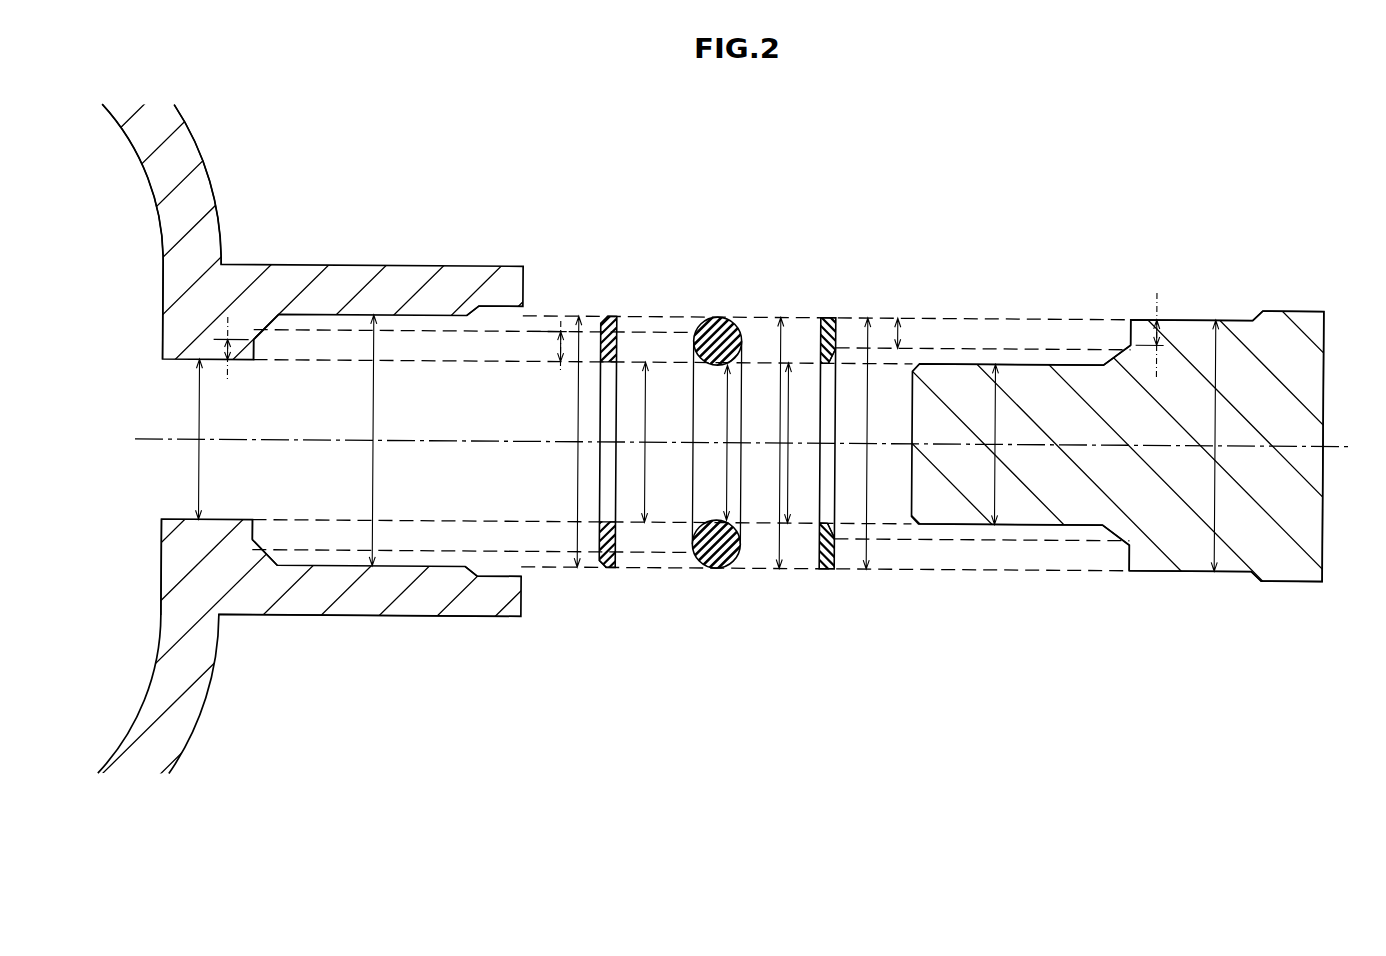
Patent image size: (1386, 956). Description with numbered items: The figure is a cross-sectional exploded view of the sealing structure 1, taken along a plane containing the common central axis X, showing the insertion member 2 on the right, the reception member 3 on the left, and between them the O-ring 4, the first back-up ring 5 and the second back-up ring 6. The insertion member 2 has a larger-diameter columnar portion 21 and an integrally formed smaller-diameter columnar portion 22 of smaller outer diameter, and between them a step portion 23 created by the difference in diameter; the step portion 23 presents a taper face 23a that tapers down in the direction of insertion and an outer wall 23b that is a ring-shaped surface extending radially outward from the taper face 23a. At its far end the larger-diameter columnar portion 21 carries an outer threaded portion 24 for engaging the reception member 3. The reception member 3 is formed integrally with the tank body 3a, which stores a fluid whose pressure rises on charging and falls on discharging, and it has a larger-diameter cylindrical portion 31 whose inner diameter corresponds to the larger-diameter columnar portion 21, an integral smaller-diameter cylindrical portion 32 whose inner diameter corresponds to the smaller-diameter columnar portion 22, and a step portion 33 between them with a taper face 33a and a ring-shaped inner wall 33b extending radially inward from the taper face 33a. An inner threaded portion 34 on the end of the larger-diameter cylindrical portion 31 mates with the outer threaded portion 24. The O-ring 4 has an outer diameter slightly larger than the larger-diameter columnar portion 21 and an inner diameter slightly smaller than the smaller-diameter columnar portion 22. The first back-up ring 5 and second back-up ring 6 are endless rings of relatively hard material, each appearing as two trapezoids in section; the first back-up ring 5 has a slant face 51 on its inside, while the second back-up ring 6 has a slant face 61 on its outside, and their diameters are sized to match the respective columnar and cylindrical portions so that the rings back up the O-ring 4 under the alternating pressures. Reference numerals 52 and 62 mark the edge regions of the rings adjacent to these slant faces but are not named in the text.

The sealing structure 1 is at (1019, 203).
The insertion member 2 is at (1187, 311).
The reception member 3 is at (357, 261).
The tank body 3a is at (184, 155).
The O-ring 4 is at (717, 310).
The first back-up ring 5 is at (832, 310).
The second back-up ring 6 is at (611, 310).
The larger-diameter columnar portion 21 is at (1235, 567).
The smaller-diameter columnar portion 22 is at (952, 524).
The step portion 23 is at (1023, 634).
The taper face 23a is at (1112, 528).
The outer wall 23b is at (1129, 559).
The outer threaded portion 24 is at (1297, 578).
The larger-diameter cylindrical portion 31 is at (427, 620).
The smaller-diameter cylindrical portion 32 is at (208, 548).
The step portion 33 is at (350, 669).
The taper face 33a is at (284, 560).
The inner wall 33b is at (258, 551).
The inner threaded portion 34 is at (487, 580).
The slant face 51 is at (838, 526).
The chamfer 52 is at (836, 553).
The slant face 61 is at (607, 569).
The chamfer 62 is at (600, 551).